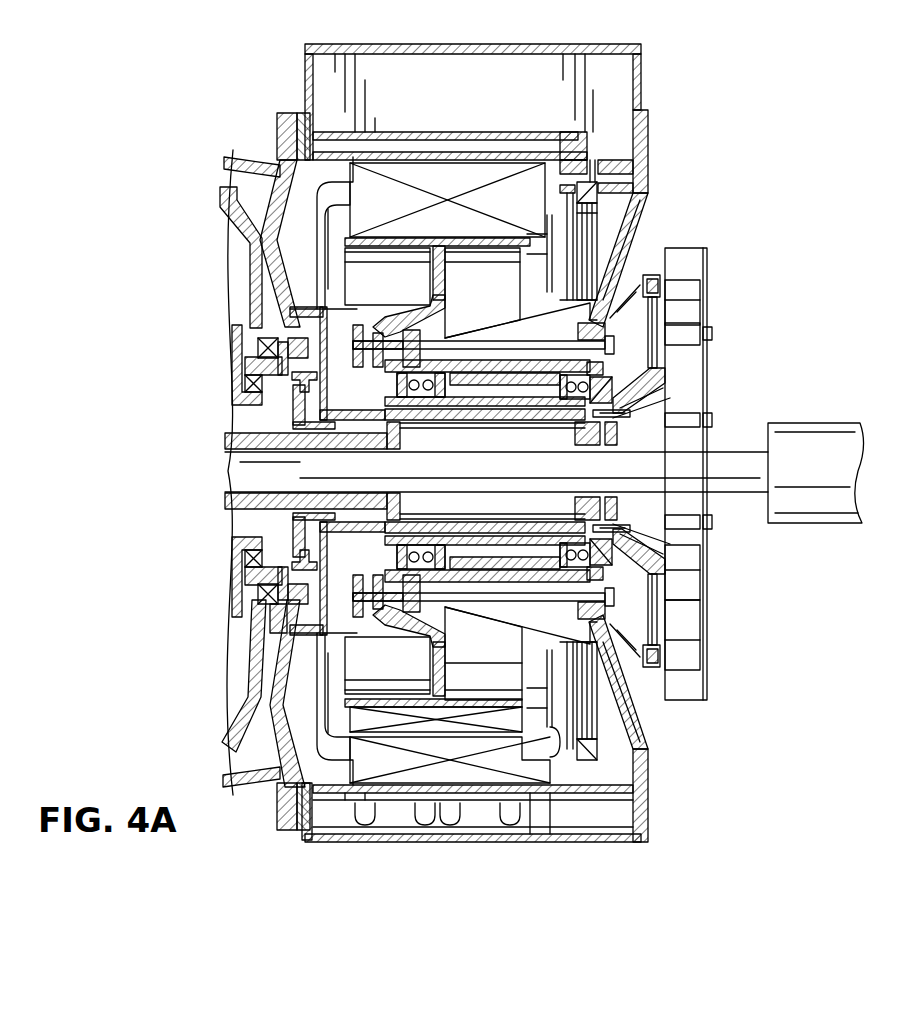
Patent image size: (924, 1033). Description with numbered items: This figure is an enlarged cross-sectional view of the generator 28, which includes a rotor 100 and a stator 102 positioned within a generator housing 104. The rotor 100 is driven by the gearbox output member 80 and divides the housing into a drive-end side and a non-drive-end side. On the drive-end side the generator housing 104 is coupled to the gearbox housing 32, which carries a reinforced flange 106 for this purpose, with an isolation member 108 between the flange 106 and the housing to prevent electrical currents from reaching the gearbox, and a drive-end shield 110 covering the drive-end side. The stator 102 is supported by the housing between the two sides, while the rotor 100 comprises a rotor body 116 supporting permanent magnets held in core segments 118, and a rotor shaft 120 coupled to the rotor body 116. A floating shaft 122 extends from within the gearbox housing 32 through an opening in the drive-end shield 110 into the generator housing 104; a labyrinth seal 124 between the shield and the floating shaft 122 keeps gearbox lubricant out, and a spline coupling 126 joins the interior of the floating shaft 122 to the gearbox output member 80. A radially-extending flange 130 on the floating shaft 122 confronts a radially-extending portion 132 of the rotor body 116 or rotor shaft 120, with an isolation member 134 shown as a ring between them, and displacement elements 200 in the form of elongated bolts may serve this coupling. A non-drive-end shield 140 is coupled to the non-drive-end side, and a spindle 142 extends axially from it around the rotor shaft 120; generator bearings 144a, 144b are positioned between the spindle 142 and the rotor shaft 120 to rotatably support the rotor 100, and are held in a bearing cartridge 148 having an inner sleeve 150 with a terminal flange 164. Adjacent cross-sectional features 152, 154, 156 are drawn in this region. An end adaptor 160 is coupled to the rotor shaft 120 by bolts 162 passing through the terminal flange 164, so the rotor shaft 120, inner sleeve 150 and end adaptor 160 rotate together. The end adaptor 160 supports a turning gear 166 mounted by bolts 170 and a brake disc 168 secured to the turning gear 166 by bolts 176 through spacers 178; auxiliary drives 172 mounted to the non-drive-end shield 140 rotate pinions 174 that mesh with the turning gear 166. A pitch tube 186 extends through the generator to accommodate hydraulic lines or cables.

The generator 28 is at (650, 66).
The gearbox housing 32 is at (230, 152).
The gearbox output member 80 is at (320, 456).
The rotor 100 is at (343, 228).
The stator 102 is at (524, 168).
The generator housing 104 is at (640, 40).
The reinforced flange 106 is at (280, 118).
The isolation member 108 is at (290, 113).
The drive-end shield 110 is at (300, 113).
The rotor body 116 is at (450, 292).
The core segments 118 is at (397, 220).
The rotor shaft 120 is at (465, 420).
The floating shaft 122 is at (345, 336).
The labyrinth seal 124 is at (300, 412).
The spline coupling 126 is at (240, 440).
The radially-extending flange 130 is at (285, 380).
The radially-extending portion 132 is at (330, 547).
The isolation member 134 is at (300, 570).
The non-drive-end shield 140 is at (648, 196).
The spindle 142 is at (455, 592).
The generator bearing 144a is at (432, 400).
The generator bearing 144b is at (570, 400).
The bearing cartridge 148 is at (522, 550).
The inner sleeve 150 is at (448, 530).
The bearing housing 152 is at (484, 560).
The tie rod 154 is at (400, 365).
The hub flange 156 is at (615, 385).
The end adaptor 160 is at (630, 405).
The bolts 162 is at (640, 425).
The terminal flange 164 is at (615, 428).
The turning gear 166 is at (652, 275).
The brake disc 168 is at (707, 562).
The bolts 170 is at (700, 560).
The auxiliary drives 172 is at (705, 664).
The pinions 174 is at (660, 668).
The bolts 176 is at (712, 333).
The spacers 178 is at (685, 325).
The pitch tube 186 is at (735, 496).
The displacement elements 200 is at (640, 760).